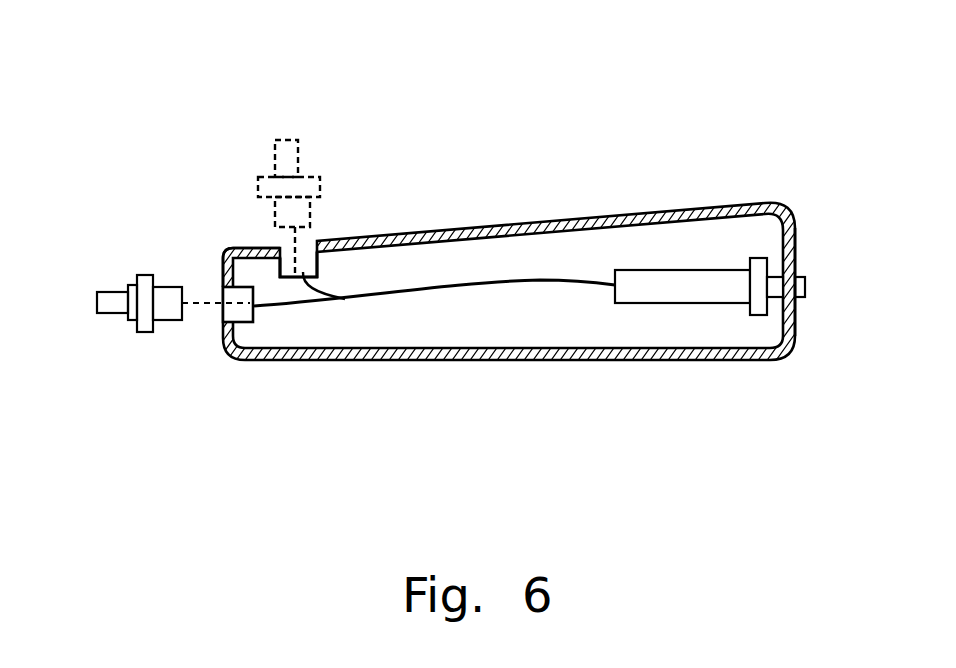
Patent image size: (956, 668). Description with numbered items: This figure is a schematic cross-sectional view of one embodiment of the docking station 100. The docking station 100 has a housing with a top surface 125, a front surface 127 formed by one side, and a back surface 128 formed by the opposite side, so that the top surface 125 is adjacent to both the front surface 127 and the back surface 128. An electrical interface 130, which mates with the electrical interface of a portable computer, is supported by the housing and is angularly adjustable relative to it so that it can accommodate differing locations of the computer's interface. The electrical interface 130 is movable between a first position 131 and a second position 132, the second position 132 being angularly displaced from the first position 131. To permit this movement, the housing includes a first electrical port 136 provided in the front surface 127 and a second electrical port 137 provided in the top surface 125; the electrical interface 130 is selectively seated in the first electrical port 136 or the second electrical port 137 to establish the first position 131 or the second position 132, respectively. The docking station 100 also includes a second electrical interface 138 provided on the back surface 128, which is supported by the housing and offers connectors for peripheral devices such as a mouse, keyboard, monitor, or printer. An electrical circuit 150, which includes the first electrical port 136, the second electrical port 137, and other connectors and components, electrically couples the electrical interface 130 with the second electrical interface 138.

The docking station 100 is at (695, 116).
The top surface 125 is at (503, 226).
The front surface 127 is at (223, 283).
The back surface 128 is at (795, 333).
The electrical interface 130 is at (125, 348).
The first position 131 is at (112, 305).
The second position 132 is at (286, 155).
The first electrical port 136 is at (248, 314).
The second electrical port 137 is at (303, 272).
The second electrical interface 138 is at (846, 264).
The electrical circuit 150 is at (580, 316).